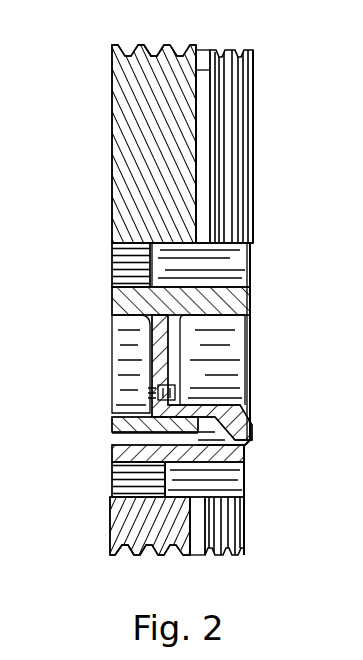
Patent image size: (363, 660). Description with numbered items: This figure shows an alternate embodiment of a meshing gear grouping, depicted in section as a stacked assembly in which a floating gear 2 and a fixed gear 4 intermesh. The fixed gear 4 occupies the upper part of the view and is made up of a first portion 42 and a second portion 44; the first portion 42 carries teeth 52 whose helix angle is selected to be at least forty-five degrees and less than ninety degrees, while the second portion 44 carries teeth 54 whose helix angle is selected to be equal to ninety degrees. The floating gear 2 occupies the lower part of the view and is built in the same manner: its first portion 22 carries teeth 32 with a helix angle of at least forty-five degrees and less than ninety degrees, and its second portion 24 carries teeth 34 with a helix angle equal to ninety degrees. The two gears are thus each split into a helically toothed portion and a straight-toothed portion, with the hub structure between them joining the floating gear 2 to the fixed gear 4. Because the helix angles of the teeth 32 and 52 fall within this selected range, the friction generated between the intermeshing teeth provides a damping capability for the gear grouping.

The floating gear 2 is at (200, 553).
The fixed gear 4 is at (205, 58).
The first portion of the floating gear 22 is at (110, 503).
The second portion of the floating gear 24 is at (244, 502).
The teeth on the first portion of the floating gear 32 is at (117, 548).
The teeth on the second portion of the floating gear 34 is at (244, 556).
The first portion of the fixed gear 42 is at (112, 215).
The second portion of the fixed gear 44 is at (253, 157).
The teeth on the first portion of the fixed gear 52 is at (153, 48).
The teeth on the second portion of the fixed gear 54 is at (224, 50).